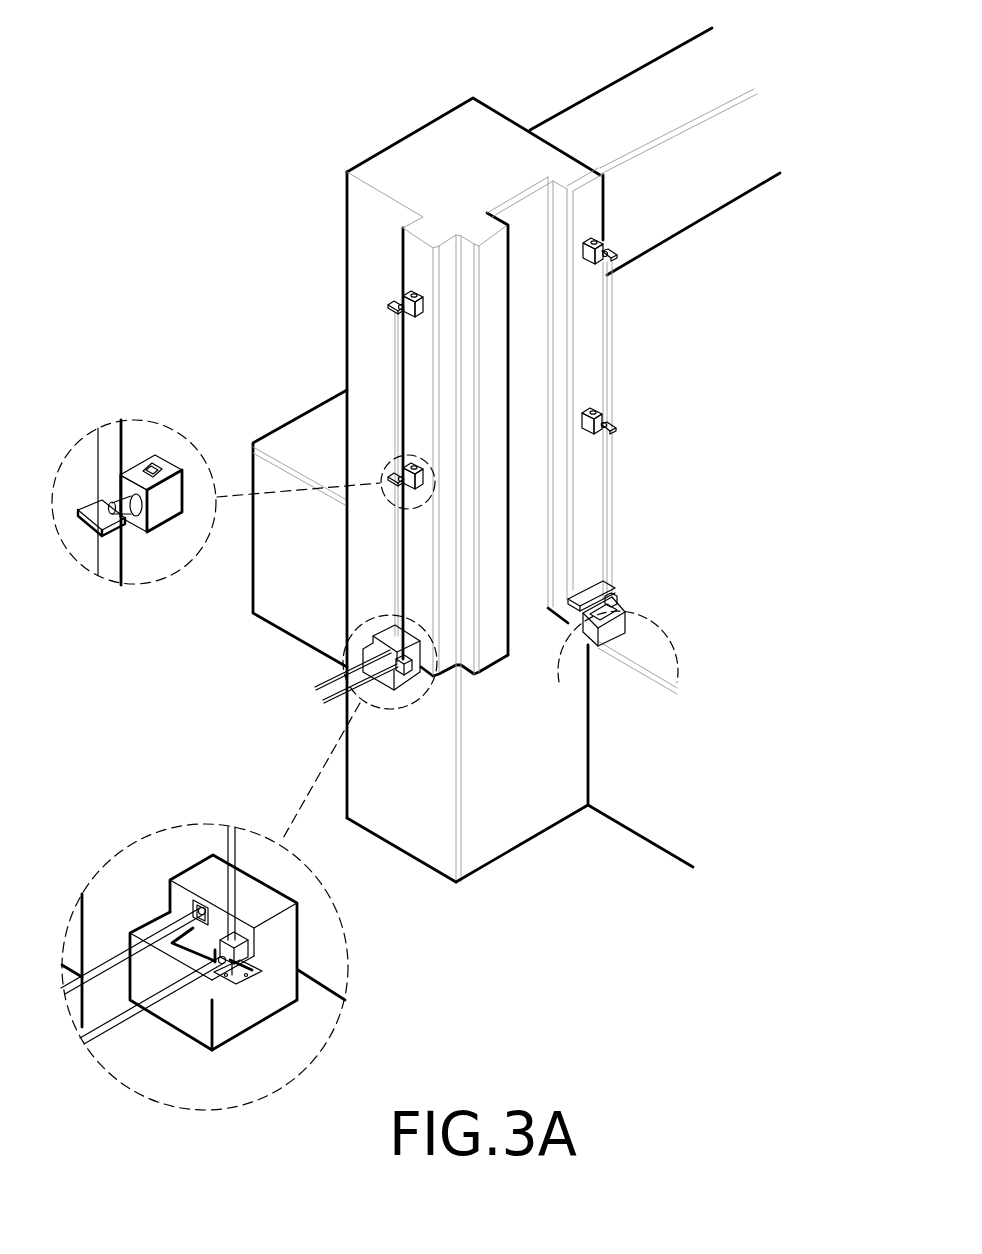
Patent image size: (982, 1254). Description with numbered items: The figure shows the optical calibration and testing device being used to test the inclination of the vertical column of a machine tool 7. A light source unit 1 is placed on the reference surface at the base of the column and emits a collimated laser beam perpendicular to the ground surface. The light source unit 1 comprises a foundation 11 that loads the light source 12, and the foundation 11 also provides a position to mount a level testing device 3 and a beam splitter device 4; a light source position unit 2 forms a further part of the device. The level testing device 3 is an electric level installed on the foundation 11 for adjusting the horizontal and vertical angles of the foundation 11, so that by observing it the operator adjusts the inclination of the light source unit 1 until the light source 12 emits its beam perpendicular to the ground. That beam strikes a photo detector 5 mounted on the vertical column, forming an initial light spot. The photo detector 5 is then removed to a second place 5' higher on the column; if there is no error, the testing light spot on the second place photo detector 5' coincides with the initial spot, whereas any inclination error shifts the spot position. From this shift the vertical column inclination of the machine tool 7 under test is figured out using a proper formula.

The light source unit 1 is at (582, 643).
The light source position unit 2 is at (360, 650).
The level testing device 3 is at (613, 613).
The beam splitter device 4 is at (247, 958).
The photo detector 5 is at (364, 504).
The second place photo detector 5' is at (509, 284).
The machine tool 7 is at (523, 818).
The foundation 11 is at (172, 1017).
The light source 12 is at (247, 982).